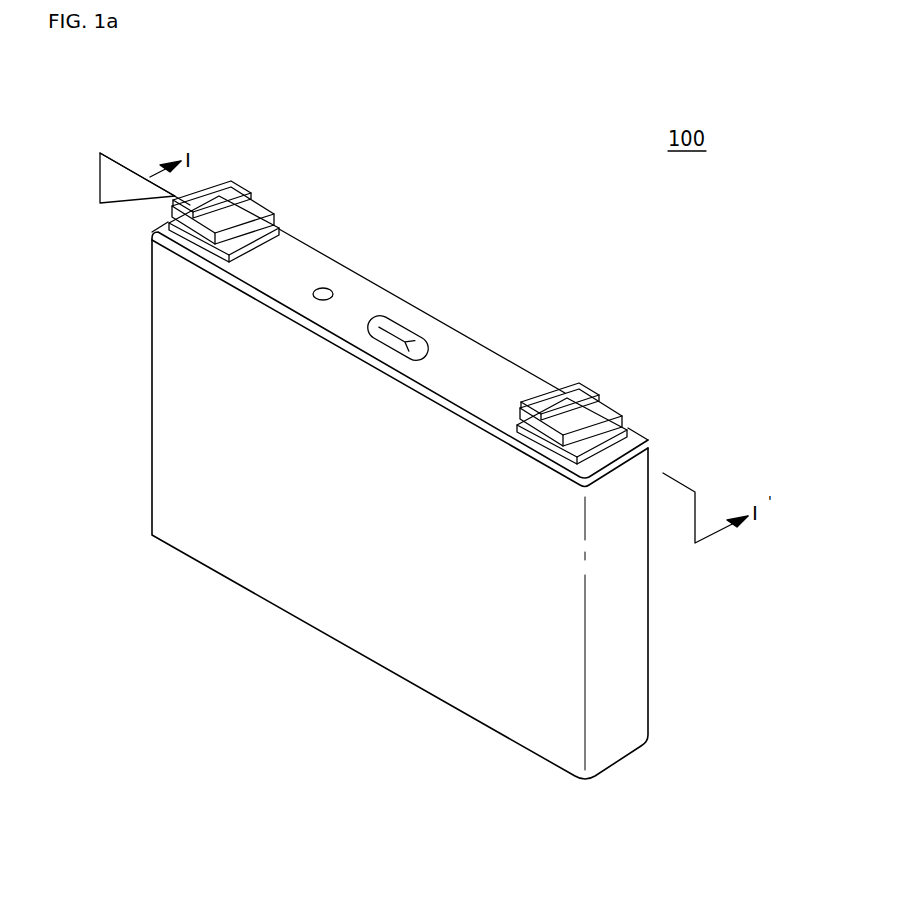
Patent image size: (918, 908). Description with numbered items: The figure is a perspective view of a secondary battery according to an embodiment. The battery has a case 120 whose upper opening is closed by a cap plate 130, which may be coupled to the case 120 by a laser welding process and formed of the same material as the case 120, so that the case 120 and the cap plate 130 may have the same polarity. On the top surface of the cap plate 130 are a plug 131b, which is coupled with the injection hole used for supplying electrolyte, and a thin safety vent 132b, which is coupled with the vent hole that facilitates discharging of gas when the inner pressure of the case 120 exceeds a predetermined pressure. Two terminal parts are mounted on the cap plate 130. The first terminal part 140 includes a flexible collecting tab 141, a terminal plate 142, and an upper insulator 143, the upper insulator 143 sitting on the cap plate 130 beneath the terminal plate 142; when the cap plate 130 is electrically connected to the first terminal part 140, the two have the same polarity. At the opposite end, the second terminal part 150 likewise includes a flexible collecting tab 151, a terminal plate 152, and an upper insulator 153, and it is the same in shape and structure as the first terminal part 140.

The case 120 is at (345, 608).
The cap plate 130 is at (473, 360).
The plug 131b is at (330, 290).
The safety vent 132b is at (400, 328).
The first terminal part 140 is at (620, 392).
The flexible collecting tab 141 is at (568, 418).
The terminal plate 142 is at (603, 417).
The upper insulator 143 is at (613, 448).
The second terminal part 150 is at (205, 197).
The flexible collecting tab 151 is at (236, 210).
The terminal plate 152 is at (260, 217).
The upper insulator 153 is at (200, 247).